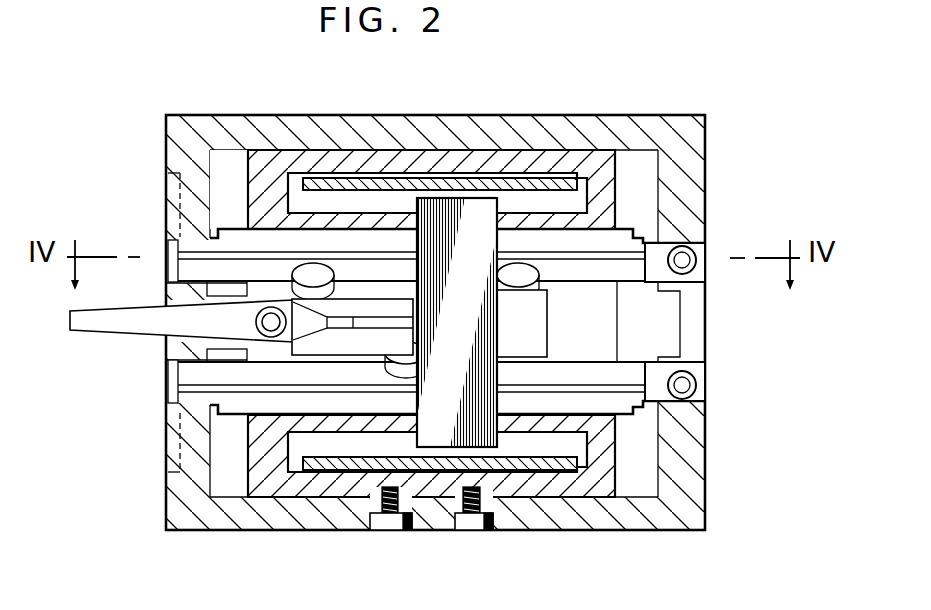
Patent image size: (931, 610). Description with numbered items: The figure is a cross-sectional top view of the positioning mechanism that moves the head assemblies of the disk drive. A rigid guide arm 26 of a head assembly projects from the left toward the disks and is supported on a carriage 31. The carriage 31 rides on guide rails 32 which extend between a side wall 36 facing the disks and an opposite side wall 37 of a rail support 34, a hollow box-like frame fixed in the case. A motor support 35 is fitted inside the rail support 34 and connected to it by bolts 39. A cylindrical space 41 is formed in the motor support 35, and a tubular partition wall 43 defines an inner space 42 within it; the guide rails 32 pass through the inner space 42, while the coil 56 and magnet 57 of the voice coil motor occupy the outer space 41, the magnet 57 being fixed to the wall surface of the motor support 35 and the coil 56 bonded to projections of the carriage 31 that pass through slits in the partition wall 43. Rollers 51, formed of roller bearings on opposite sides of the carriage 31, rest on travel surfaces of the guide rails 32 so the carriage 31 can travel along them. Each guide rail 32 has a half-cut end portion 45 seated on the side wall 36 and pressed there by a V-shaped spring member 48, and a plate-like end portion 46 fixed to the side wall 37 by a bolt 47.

The guide arm 26 is at (135, 325).
The carriage 31 is at (377, 300).
The guide rails 32 is at (268, 237).
The rail support 34 is at (165, 497).
The motor support 35 is at (240, 172).
The side wall 36 is at (167, 117).
The side wall 37 is at (708, 128).
The bolts 39 is at (387, 527).
The cylindrical space 41 is at (538, 448).
The inner space 42 is at (563, 408).
The tubular partition wall 43 is at (553, 428).
The end portion 45 is at (197, 243).
The end portion 46 is at (702, 247).
The bolt 47 is at (690, 252).
The spring member 48 is at (173, 267).
The rollers 51 is at (523, 282).
The coil 56 is at (442, 440).
The magnet 57 is at (503, 183).